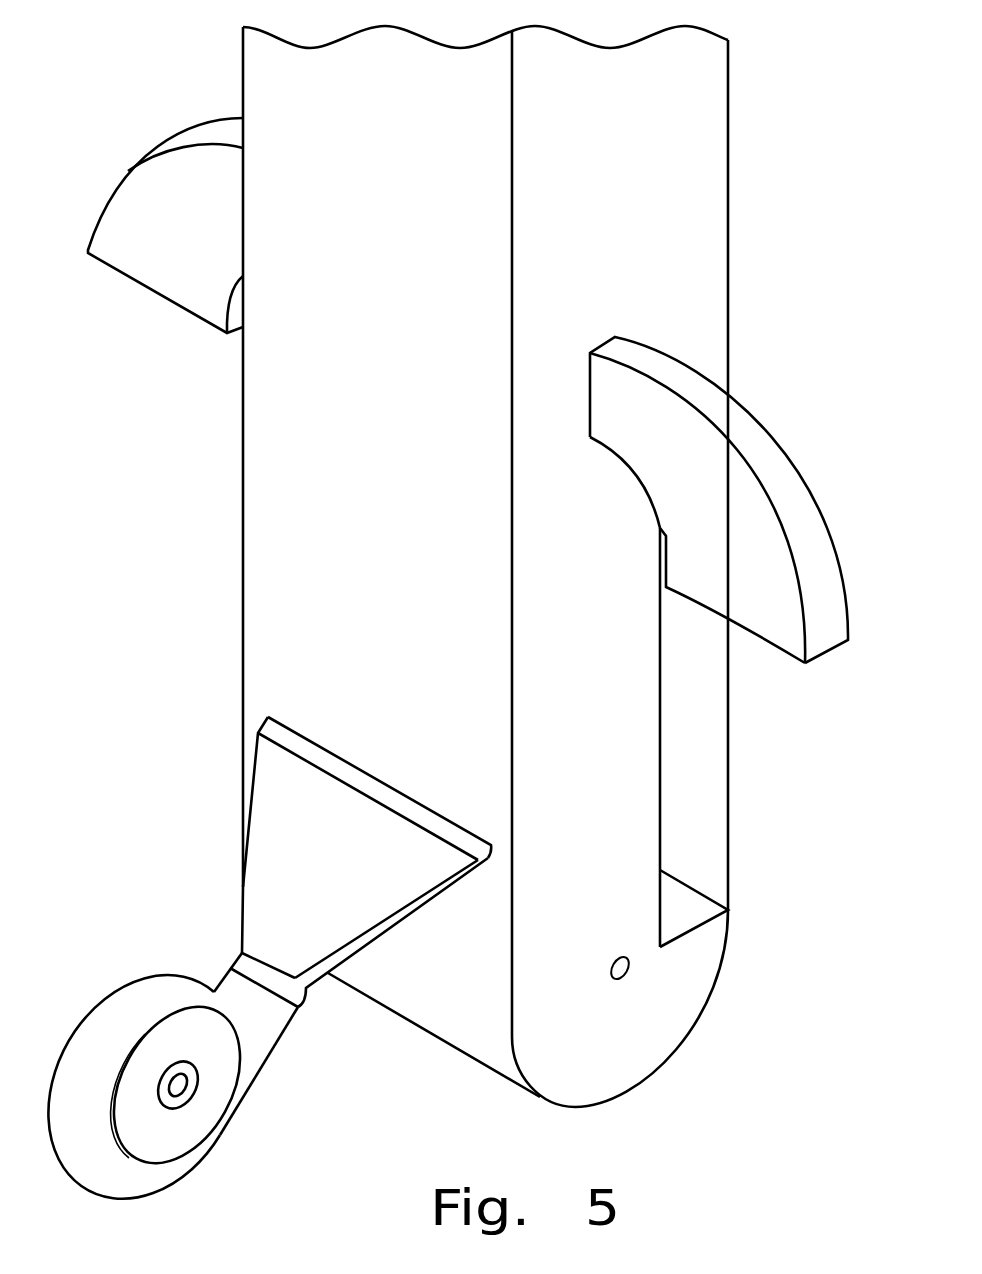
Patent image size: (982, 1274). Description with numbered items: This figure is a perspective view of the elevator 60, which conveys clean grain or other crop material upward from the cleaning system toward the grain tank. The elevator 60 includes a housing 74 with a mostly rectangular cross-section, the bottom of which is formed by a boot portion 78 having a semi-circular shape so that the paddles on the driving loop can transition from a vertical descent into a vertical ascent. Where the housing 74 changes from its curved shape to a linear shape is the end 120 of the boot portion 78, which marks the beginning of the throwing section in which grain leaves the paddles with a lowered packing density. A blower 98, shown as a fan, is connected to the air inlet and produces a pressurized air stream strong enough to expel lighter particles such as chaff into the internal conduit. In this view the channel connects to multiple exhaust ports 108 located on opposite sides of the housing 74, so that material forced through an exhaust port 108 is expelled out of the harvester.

The elevator 60 is at (460, 612).
The housing 74 is at (258, 588).
The boot portion 78 is at (540, 1098).
The exhaust port 108 is at (150, 288).
The end of the boot portion 120 is at (467, 1007).
The blower 98 is at (102, 1015).